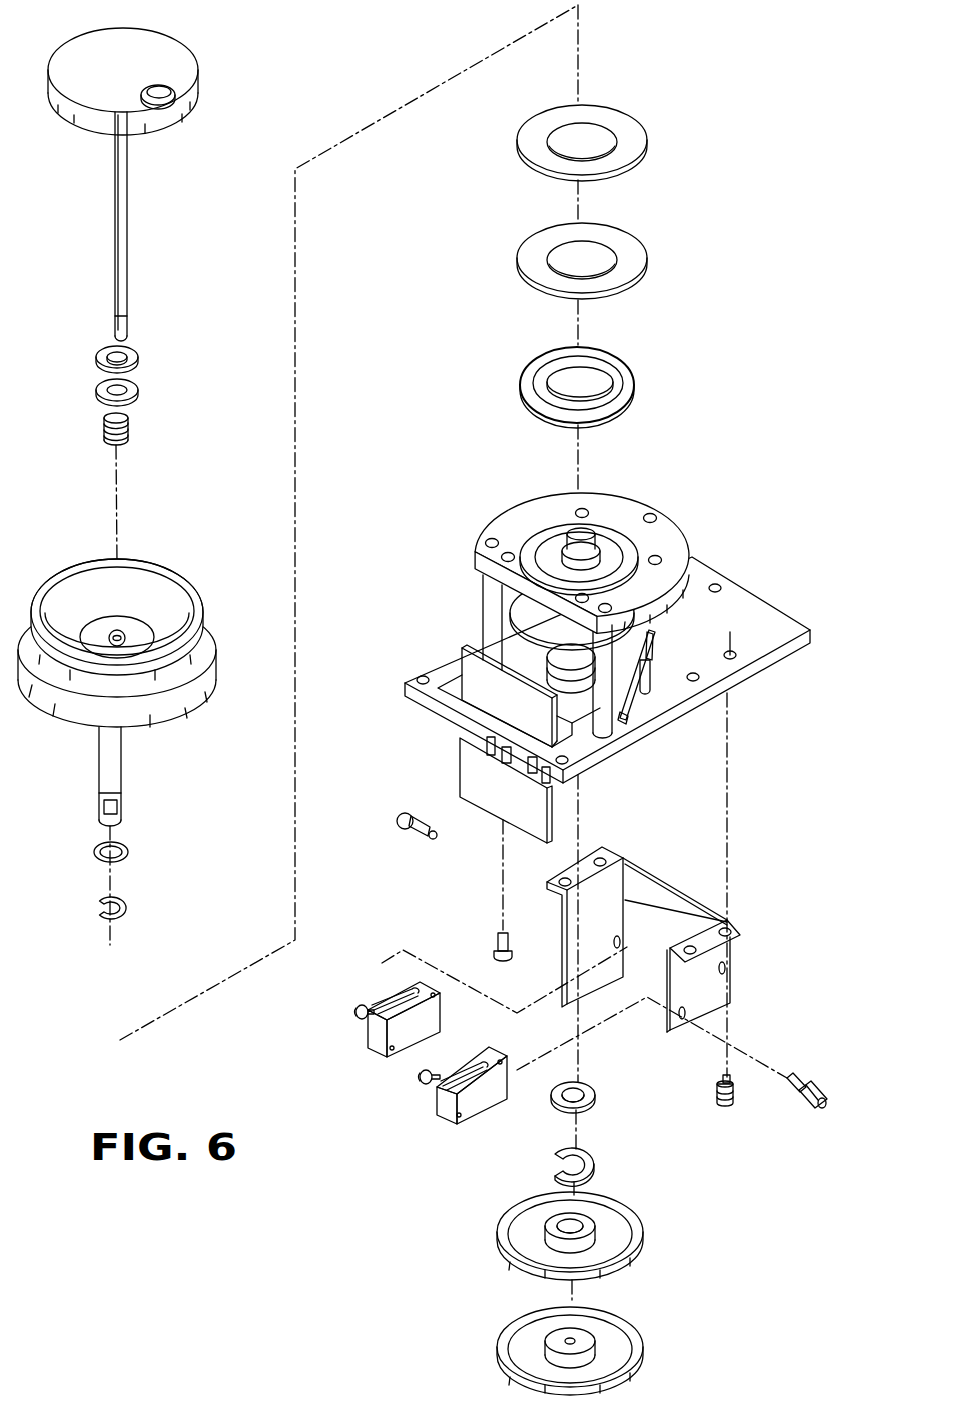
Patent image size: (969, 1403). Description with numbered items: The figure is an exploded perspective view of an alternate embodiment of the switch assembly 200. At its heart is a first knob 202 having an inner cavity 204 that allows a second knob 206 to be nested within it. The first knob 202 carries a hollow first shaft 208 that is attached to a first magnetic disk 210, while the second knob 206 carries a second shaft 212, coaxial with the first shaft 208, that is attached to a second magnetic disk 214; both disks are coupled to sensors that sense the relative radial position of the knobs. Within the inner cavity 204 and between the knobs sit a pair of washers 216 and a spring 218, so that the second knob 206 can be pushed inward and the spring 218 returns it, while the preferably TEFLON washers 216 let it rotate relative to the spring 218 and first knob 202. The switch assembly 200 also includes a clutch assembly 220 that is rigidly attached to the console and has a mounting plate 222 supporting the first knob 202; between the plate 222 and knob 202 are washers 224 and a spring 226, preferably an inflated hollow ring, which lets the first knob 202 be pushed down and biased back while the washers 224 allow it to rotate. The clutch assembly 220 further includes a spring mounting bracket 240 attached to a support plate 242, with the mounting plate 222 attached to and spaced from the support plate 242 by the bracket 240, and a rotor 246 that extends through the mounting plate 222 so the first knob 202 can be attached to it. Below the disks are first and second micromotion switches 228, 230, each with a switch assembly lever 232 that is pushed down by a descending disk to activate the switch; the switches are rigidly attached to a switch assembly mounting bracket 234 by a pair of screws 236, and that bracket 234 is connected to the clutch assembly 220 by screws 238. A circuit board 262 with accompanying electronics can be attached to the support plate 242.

The switch assembly 200 is at (392, 271).
The first knob 202 is at (208, 658).
The inner cavity 204 is at (152, 602).
The second knob 206 is at (196, 72).
The first shaft 208 is at (118, 767).
The first magnetic disk 210 is at (642, 1237).
The second shaft 212 is at (128, 215).
The second magnetic disk 214 is at (640, 1345).
The washers 216 is at (138, 354).
The spring 218 is at (104, 428).
The clutch assembly 220 is at (726, 541).
The mounting plate 222 is at (628, 507).
The washers 224 is at (630, 257).
The spring 226 is at (628, 378).
The first micromotion switch 228 is at (370, 1037).
The second micromotion switch 230 is at (446, 1105).
The switch assembly lever 232 is at (360, 1005).
The switch assembly mounting bracket 234 is at (740, 930).
The screws 236 is at (812, 1083).
The screws 238 is at (718, 1092).
The spring mounting bracket 240 is at (605, 712).
The support plate 242 is at (763, 613).
The rotor 246 is at (573, 532).
The circuit board 262 is at (467, 770).